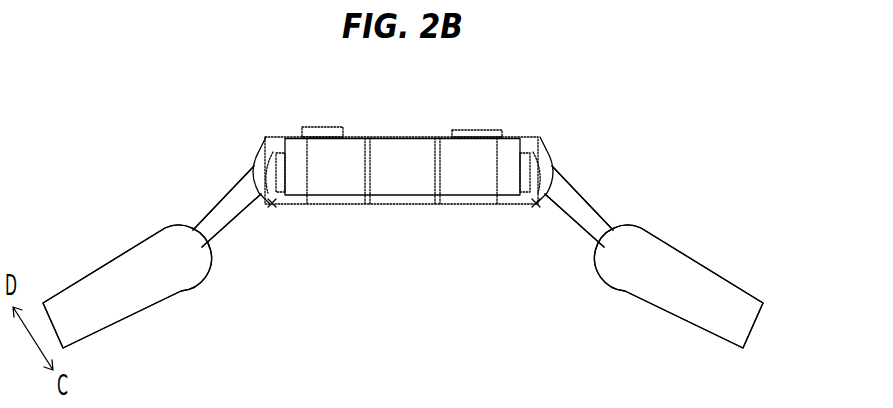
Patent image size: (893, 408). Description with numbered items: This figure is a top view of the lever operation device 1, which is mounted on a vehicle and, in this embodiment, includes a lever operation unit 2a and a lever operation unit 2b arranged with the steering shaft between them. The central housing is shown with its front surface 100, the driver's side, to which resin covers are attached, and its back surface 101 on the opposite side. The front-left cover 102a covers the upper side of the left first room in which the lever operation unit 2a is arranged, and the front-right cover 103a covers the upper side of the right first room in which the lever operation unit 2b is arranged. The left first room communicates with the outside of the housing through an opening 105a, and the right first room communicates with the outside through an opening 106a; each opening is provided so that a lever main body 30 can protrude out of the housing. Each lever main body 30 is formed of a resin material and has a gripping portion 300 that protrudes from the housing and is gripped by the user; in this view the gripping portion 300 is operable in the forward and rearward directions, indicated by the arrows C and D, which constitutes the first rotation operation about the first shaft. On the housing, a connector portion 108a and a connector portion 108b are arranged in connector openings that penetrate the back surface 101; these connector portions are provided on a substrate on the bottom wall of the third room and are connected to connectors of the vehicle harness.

The lever operation device 1 is at (777, 93).
The lever operation unit 2a is at (83, 255).
The lever operation unit 2b is at (727, 255).
The lever main body 30 is at (97, 332).
The gripping portion 300 is at (160, 238).
The front surface 100 is at (512, 197).
The back surface 101 is at (395, 137).
The front-left cover 102a is at (337, 205).
The front-right cover 103a is at (465, 205).
The opening 105a is at (275, 151).
The opening 106a is at (527, 153).
The connector portion 108a is at (323, 126).
The connector portion 108b is at (475, 129).